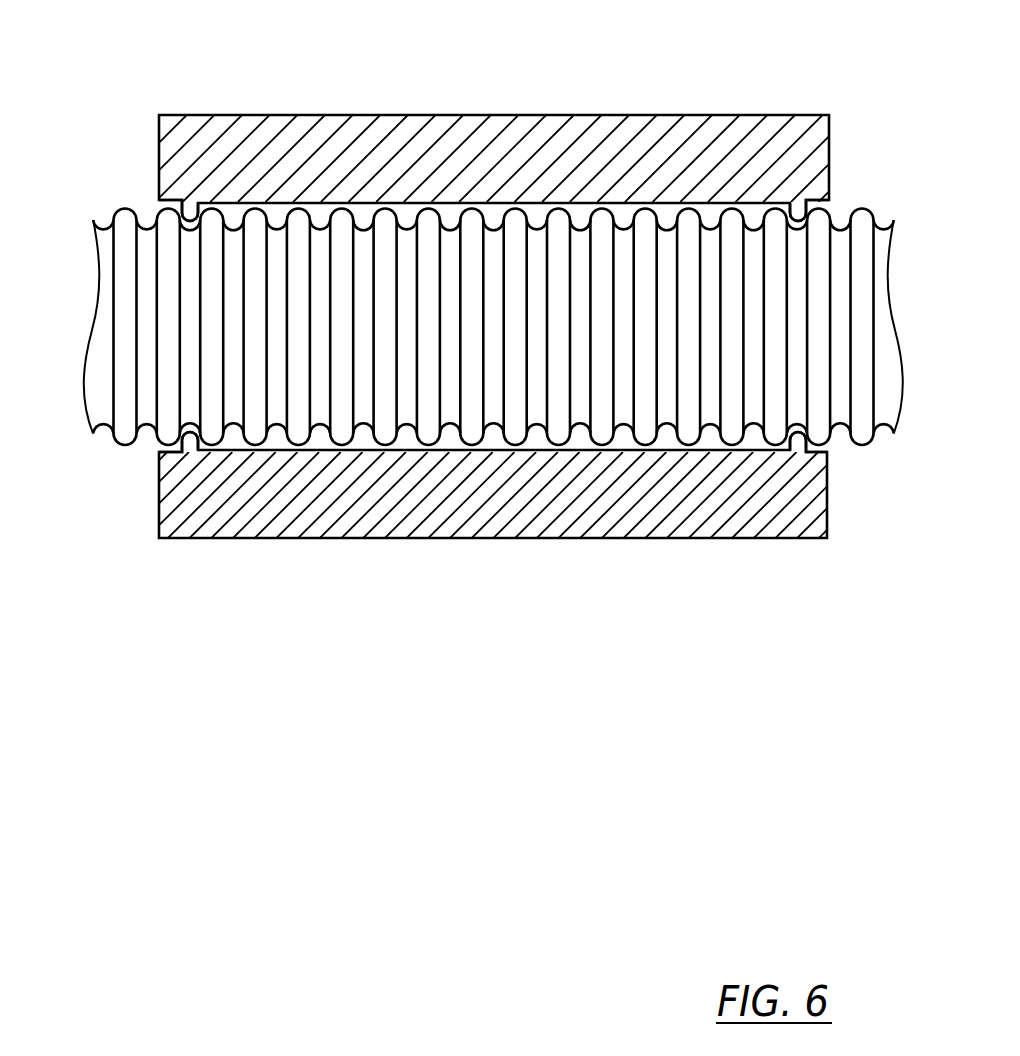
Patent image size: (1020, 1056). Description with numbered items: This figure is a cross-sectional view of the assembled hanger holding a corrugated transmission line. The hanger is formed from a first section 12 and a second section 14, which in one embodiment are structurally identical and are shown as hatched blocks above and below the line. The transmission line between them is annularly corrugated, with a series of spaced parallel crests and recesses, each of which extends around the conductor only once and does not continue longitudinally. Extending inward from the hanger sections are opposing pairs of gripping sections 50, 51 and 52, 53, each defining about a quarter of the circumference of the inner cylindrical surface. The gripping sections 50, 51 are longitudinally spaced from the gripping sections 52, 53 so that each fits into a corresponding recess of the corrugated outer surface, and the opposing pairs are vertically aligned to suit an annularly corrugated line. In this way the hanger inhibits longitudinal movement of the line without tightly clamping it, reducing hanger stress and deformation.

The first section 12 is at (343, 115).
The second section 14 is at (633, 538).
The gripping section 50 is at (160, 203).
The gripping section 51 is at (170, 452).
The gripping section 52 is at (829, 203).
The gripping section 53 is at (815, 452).